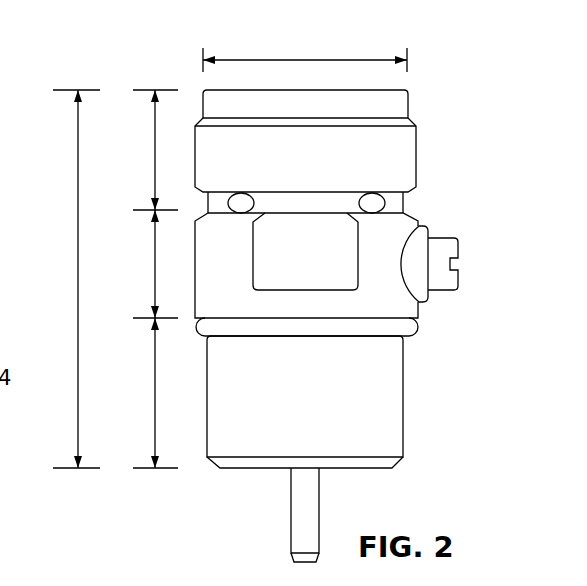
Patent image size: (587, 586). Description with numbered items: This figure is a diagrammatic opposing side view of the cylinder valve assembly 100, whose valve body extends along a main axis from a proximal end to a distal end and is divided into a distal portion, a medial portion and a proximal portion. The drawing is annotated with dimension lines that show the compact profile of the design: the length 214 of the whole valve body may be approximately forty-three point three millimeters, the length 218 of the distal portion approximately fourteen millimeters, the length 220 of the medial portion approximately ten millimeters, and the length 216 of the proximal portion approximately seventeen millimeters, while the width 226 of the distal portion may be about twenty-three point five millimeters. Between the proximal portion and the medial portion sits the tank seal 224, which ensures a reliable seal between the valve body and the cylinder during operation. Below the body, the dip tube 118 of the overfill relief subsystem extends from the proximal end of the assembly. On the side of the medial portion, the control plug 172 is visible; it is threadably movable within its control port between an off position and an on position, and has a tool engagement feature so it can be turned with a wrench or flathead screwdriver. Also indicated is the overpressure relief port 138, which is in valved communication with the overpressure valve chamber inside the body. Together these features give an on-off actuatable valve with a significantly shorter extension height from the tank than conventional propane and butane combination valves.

The cylinder valve assembly 100 is at (442, 95).
The dip tube 118 is at (291, 505).
The overpressure relief port 138 is at (241, 200).
The control plug 172 is at (440, 238).
The length of the valve body 214 is at (78, 278).
The length of the proximal portion 216 is at (155, 390).
The length of the distal portion 218 is at (155, 150).
The length of the medial portion 220 is at (155, 265).
The tank seal 224 is at (420, 332).
The width of the distal portion 226 is at (305, 60).